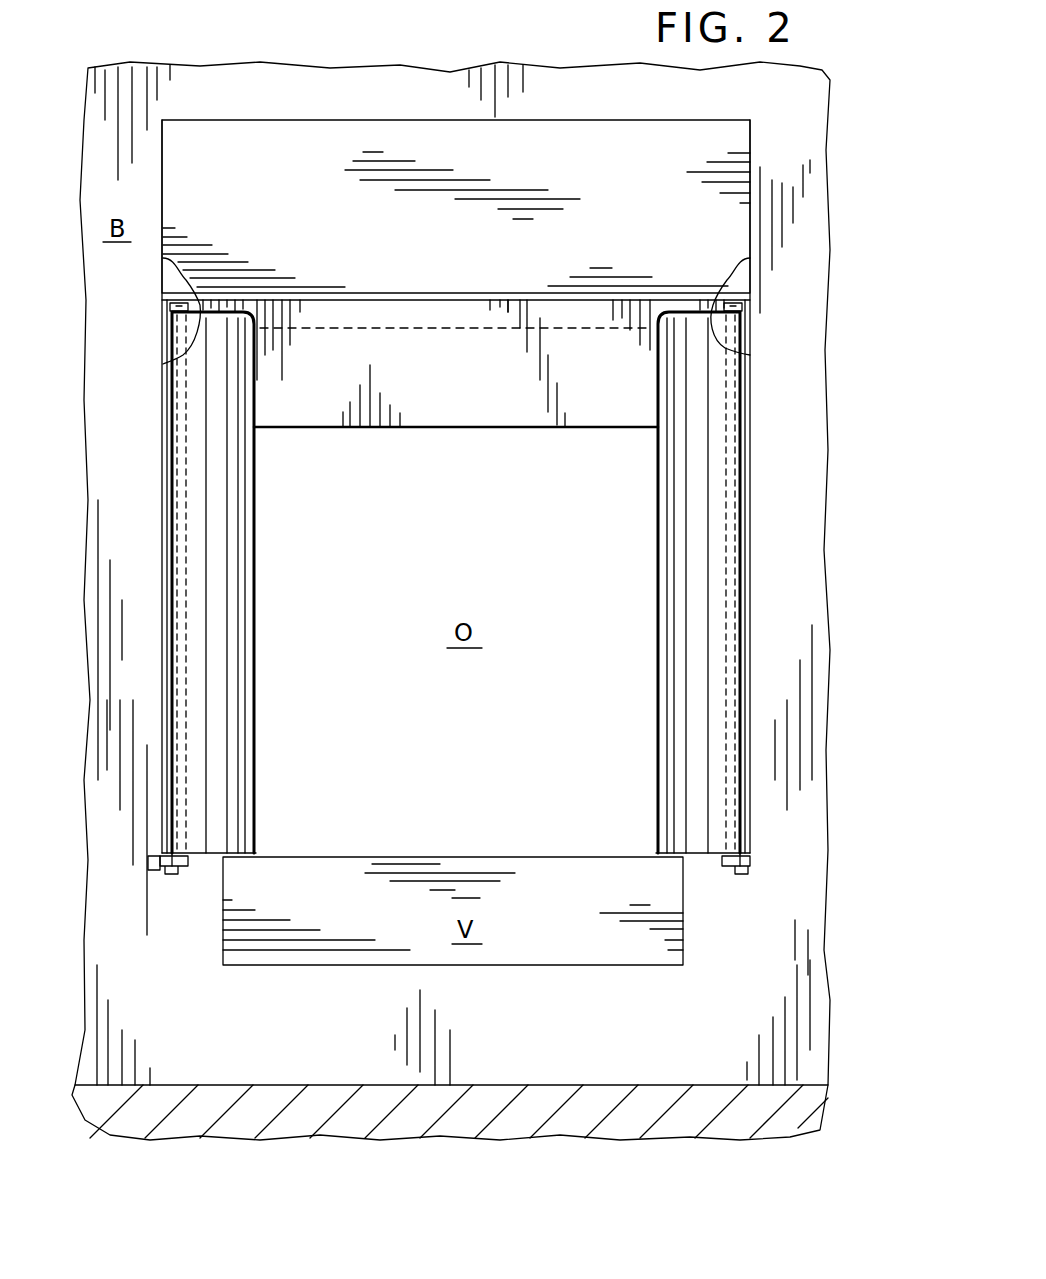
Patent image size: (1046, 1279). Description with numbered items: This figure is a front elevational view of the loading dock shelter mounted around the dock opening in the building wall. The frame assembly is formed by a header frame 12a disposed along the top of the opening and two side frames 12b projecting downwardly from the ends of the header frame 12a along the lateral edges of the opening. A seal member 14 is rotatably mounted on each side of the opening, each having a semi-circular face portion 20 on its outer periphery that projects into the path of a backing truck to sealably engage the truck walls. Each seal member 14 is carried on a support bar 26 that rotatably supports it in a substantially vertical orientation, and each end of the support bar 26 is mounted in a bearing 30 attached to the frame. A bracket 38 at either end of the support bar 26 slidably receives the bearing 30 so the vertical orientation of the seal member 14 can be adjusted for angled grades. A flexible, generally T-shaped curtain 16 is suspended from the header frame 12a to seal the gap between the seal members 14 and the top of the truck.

The header frame 12a is at (752, 150).
The side frames 12b is at (165, 362).
The seal member 14 is at (188, 438).
The curtain member 16 is at (492, 392).
The face portion 20 is at (213, 565).
The support bar 26 is at (740, 573).
The bearing 30 is at (168, 300).
The bracket 38 is at (160, 864).